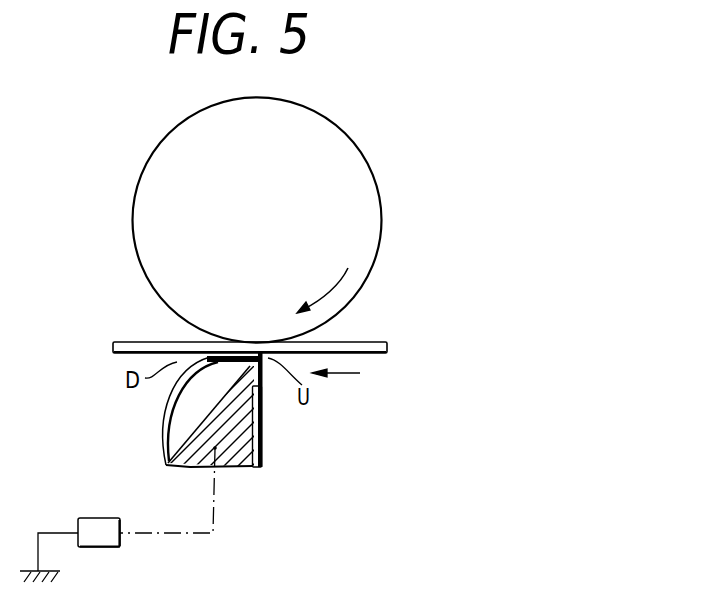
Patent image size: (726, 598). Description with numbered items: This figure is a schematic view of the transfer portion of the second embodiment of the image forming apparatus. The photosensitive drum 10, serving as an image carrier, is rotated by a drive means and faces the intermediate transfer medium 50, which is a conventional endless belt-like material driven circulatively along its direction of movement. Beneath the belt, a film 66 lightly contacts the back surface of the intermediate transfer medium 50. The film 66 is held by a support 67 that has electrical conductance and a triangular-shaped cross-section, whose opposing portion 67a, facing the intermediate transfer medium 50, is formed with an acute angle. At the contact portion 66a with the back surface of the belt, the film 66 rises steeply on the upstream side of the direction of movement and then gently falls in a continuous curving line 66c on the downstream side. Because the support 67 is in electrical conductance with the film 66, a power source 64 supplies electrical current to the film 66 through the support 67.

The photosensitive drum 10 is at (338, 123).
The intermediate transfer medium 50 is at (133, 342).
The power source 64 is at (103, 518).
The film 66 is at (260, 438).
The contact portion 66a is at (240, 347).
The continuous curving line 66c is at (157, 412).
The support 67 is at (238, 440).
The opposing portion 67a is at (259, 388).